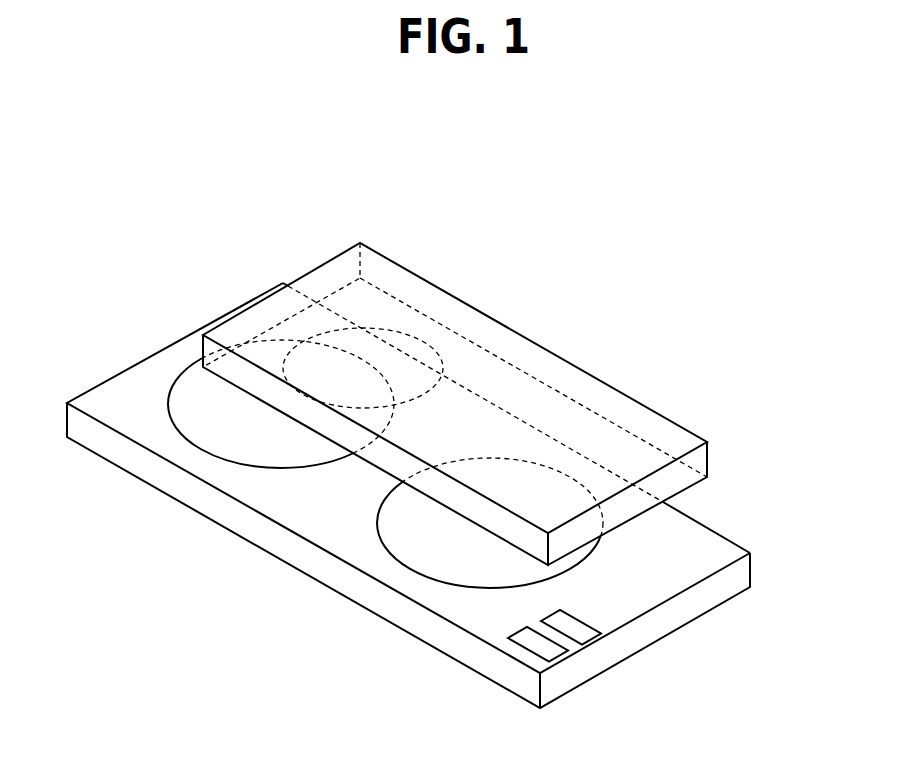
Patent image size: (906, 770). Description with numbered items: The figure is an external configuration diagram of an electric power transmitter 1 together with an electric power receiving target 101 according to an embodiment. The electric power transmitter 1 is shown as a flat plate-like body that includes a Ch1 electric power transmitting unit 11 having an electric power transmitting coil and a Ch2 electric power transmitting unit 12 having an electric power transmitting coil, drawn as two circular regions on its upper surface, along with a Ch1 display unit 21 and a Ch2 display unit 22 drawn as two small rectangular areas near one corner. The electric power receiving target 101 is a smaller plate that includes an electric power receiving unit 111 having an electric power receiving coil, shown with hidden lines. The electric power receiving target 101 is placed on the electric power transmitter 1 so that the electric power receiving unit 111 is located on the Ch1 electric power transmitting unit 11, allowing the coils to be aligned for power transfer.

The electric power transmitter 1 is at (263, 550).
The Ch1 electric power transmitting unit 11 is at (197, 448).
The Ch2 electric power transmitting unit 12 is at (400, 563).
The Ch1 display unit 21 is at (560, 655).
The Ch2 display unit 22 is at (597, 635).
The electric power receiving target 101 is at (440, 288).
The electric power receiving unit 111 is at (450, 353).